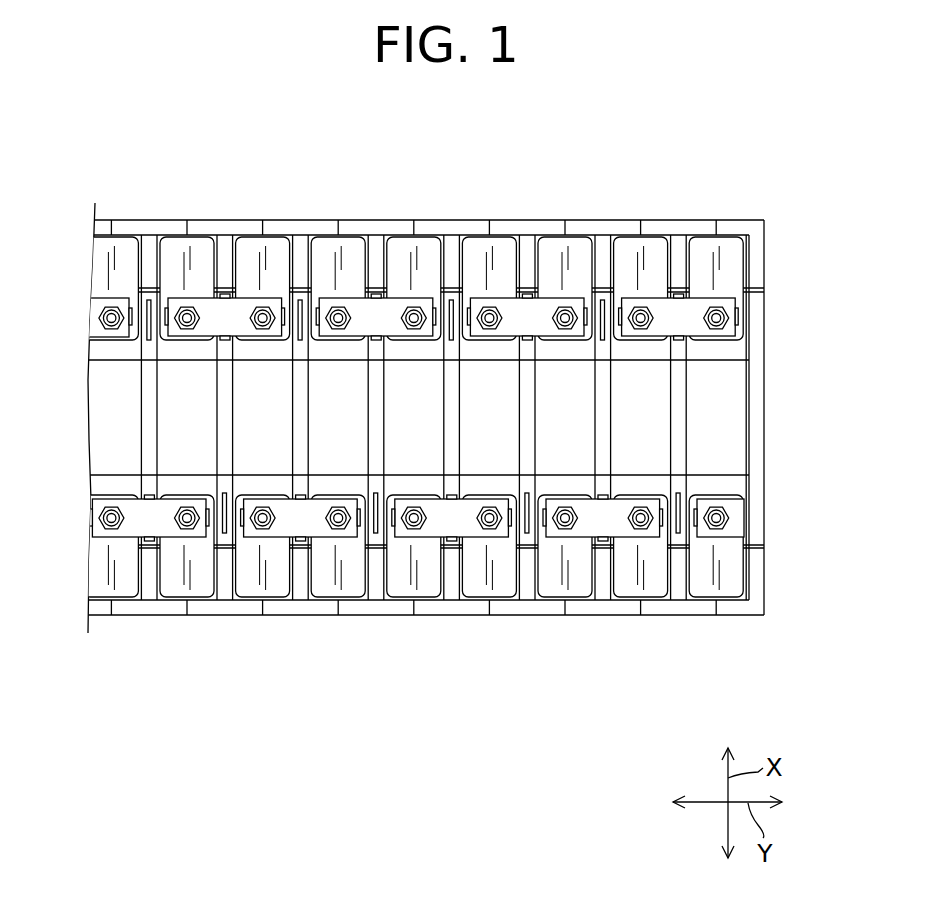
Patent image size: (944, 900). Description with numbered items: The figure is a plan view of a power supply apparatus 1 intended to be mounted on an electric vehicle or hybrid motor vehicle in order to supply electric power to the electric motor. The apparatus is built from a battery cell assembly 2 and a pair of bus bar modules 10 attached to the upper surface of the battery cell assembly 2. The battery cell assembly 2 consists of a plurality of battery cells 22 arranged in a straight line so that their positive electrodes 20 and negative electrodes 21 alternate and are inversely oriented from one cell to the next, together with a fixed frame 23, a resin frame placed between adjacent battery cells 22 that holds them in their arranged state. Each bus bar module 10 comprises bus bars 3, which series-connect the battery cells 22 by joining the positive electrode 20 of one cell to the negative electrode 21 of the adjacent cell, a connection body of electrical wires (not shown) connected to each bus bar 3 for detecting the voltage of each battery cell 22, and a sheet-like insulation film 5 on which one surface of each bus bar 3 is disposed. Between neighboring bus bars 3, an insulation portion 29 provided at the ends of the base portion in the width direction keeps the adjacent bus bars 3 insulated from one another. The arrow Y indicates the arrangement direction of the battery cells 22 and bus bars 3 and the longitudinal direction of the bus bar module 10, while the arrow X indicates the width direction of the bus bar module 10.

The power supply apparatus 1 is at (802, 133).
The battery cell assembly 2 is at (770, 565).
The bus bar 3 is at (376, 298).
The insulation film 5 is at (749, 273).
The bus bar module 10 is at (745, 240).
The positive electrode 20 is at (489, 337).
The negative electrode 21 is at (565, 337).
The battery cell 22 is at (491, 575).
The fixed frame 23 is at (768, 593).
The insulation portion 29 is at (452, 300).